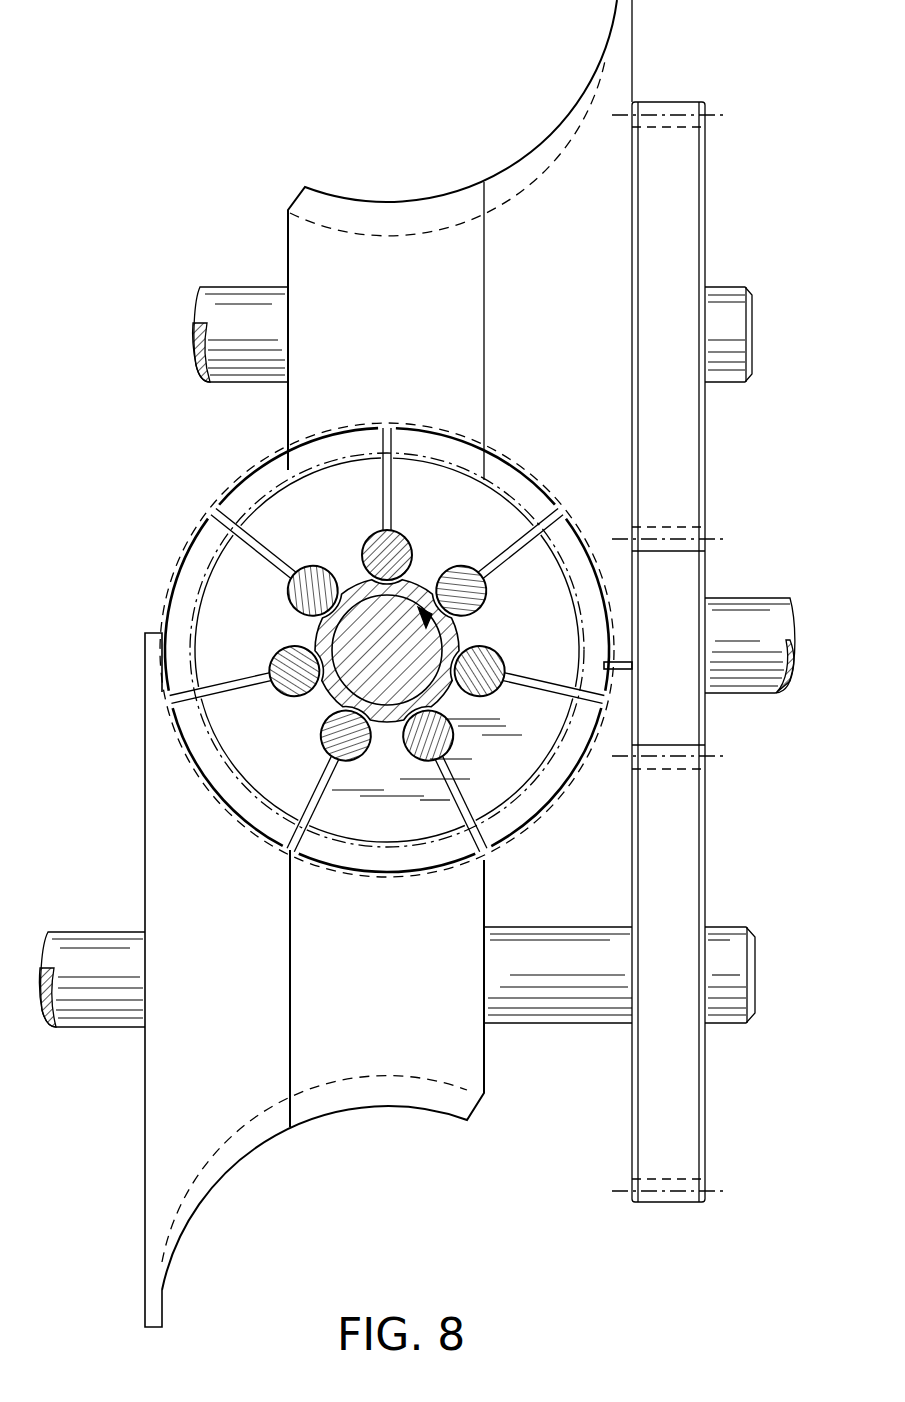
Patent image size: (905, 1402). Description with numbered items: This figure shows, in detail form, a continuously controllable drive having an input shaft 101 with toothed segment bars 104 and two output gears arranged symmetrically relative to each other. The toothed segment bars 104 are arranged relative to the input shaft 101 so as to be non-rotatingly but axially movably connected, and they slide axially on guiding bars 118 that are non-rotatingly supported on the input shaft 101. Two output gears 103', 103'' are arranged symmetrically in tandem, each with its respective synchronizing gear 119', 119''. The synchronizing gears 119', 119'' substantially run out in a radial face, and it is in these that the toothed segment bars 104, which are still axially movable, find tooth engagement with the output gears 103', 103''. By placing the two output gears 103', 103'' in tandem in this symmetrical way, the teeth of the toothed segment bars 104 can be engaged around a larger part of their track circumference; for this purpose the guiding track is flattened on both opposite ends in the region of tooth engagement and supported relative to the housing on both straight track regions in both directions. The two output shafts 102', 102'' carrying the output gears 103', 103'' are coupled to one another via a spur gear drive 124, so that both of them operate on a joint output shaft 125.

The input shaft 101 is at (278, 641).
The first output shaft 102' is at (466, 305).
The second output shaft 102'' is at (397, 1007).
The first output gear 103' is at (452, 240).
The second output gear 103'' is at (323, 1070).
The toothed segment bars 104 is at (228, 622).
The guiding bars 118 is at (300, 589).
The first synchronizing gear 119' is at (447, 148).
The second synchronizing gear 119'' is at (314, 1169).
The spur gear drive 124 is at (686, 533).
The joint output shaft 125 is at (760, 612).